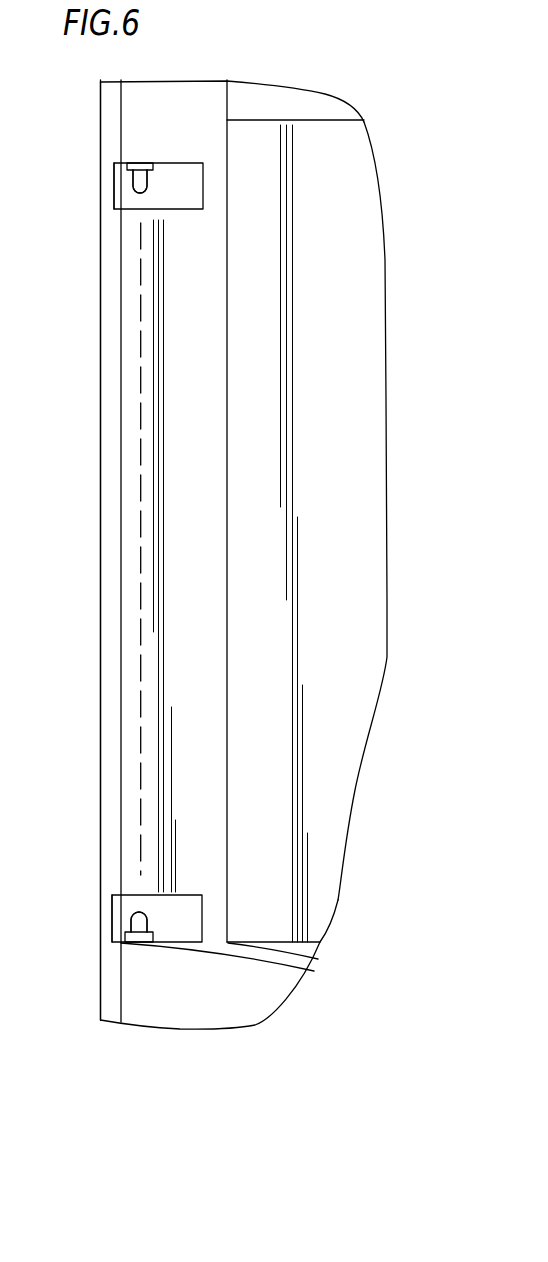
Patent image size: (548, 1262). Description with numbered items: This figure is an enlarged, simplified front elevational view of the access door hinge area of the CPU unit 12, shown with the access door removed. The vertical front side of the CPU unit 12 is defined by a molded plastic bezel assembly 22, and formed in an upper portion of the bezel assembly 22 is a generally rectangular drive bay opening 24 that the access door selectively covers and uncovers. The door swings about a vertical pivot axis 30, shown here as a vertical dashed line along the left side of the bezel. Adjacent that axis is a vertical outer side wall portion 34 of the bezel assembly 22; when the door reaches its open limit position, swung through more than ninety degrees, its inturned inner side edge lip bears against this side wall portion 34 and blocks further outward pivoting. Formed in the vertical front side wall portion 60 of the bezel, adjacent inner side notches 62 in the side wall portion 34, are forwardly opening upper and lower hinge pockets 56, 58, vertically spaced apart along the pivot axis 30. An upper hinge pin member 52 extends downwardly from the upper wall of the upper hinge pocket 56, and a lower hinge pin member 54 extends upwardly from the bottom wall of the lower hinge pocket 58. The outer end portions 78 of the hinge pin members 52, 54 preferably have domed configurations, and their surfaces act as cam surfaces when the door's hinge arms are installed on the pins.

The CPU unit 12 is at (332, 88).
The bezel assembly 22 is at (253, 1026).
The drive bay opening 24 is at (363, 601).
The vertical pivot axis 30 is at (140, 438).
The vertical outer side wall portion 34 is at (110, 673).
The upper hinge pin member 52 is at (152, 179).
The lower hinge pin member 54 is at (150, 926).
The upper hinge pocket 56 is at (183, 192).
The lower hinge pocket 58 is at (177, 920).
The vertical front side wall portion 60 is at (195, 522).
The inner side notches 62 is at (117, 184).
The outer end portions 78 is at (142, 195).